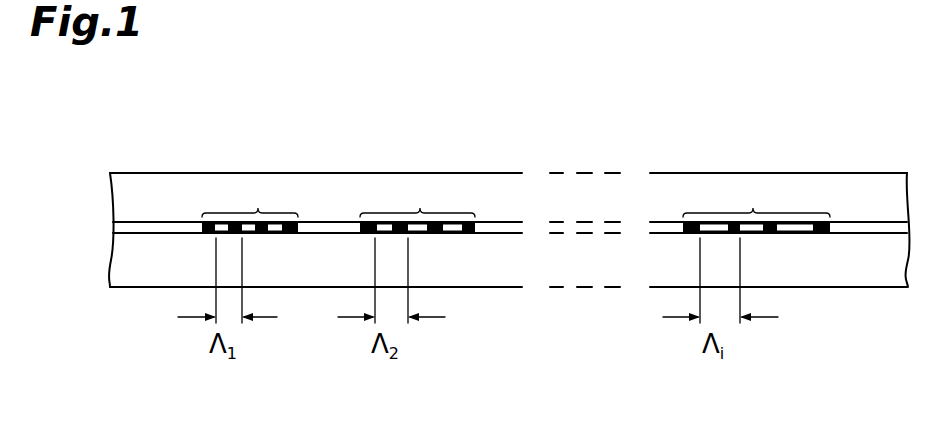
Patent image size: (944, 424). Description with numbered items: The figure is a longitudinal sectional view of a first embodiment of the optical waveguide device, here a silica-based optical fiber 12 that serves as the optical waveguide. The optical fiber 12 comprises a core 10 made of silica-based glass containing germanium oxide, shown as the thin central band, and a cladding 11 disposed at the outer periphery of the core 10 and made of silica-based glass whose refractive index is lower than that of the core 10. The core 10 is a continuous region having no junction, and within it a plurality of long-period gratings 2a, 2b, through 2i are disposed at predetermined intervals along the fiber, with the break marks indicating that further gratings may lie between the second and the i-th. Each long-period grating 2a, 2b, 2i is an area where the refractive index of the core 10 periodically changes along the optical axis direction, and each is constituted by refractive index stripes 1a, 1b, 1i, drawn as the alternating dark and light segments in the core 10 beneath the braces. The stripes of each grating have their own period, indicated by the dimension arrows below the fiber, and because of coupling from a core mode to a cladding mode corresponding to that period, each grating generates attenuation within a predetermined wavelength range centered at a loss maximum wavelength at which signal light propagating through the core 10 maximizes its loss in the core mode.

The optical fiber 12 is at (159, 160).
The cladding 11 is at (135, 288).
The core 10 is at (114, 229).
The refractive index stripe 1a is at (285, 288).
The refractive index stripe 1b is at (463, 288).
The refractive index stripe 1i is at (828, 288).
The long-period grating 2a is at (258, 208).
The long-period grating 2b is at (420, 208).
The long-period grating 2i is at (753, 208).